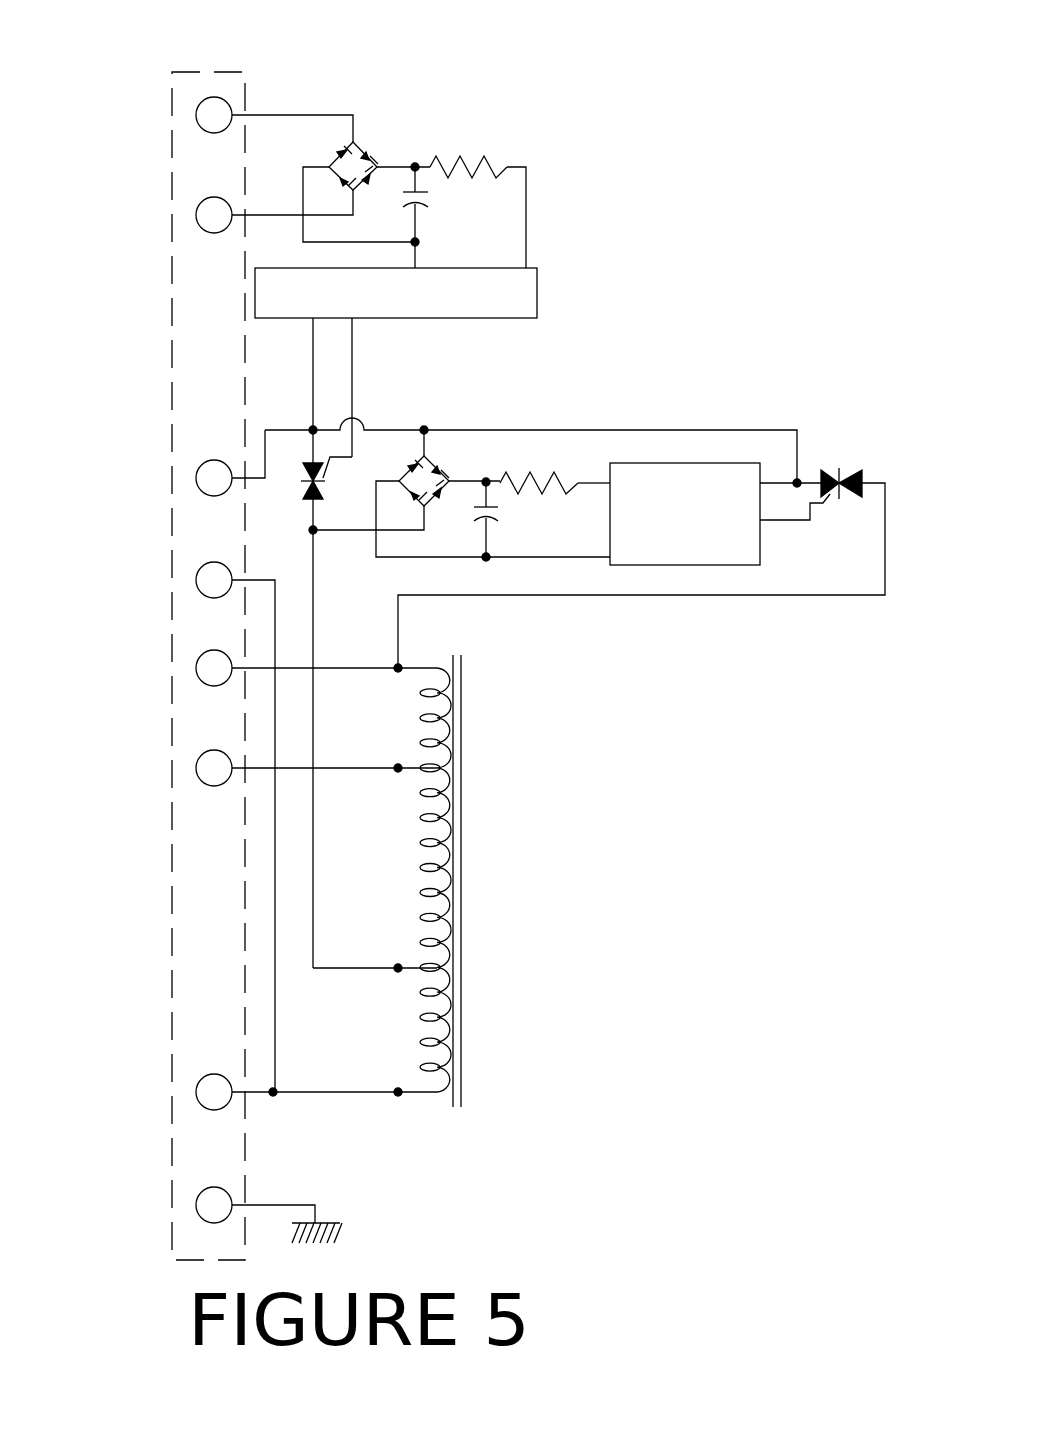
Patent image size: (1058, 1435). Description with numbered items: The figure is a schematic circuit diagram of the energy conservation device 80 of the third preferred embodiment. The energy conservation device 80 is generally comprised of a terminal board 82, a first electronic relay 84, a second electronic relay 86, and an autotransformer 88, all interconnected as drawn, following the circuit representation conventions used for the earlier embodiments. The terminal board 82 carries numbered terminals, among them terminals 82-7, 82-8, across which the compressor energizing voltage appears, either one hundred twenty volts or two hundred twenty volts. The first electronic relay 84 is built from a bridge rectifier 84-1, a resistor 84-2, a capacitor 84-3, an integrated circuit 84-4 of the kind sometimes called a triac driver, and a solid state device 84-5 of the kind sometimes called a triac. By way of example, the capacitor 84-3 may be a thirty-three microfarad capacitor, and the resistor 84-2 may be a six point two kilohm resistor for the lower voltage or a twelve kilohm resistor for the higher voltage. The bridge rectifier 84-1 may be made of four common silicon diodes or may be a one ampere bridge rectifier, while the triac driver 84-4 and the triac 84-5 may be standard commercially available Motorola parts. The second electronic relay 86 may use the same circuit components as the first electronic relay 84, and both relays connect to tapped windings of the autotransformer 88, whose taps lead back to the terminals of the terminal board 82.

The energy conservation device 80 is at (466, 664).
The terminal board 82 is at (222, 85).
The terminal 82-8 is at (199, 116).
The terminal 82-7 is at (199, 216).
The first electronic relay 84 is at (493, 193).
The bridge rectifier 84-1 is at (366, 148).
The resistor 84-2 is at (466, 152).
The capacitor 84-3 is at (427, 192).
The triac driver 84-4 is at (527, 308).
The triac 84-5 is at (320, 498).
The second electronic relay 86 is at (630, 507).
The autotransformer 88 is at (443, 843).